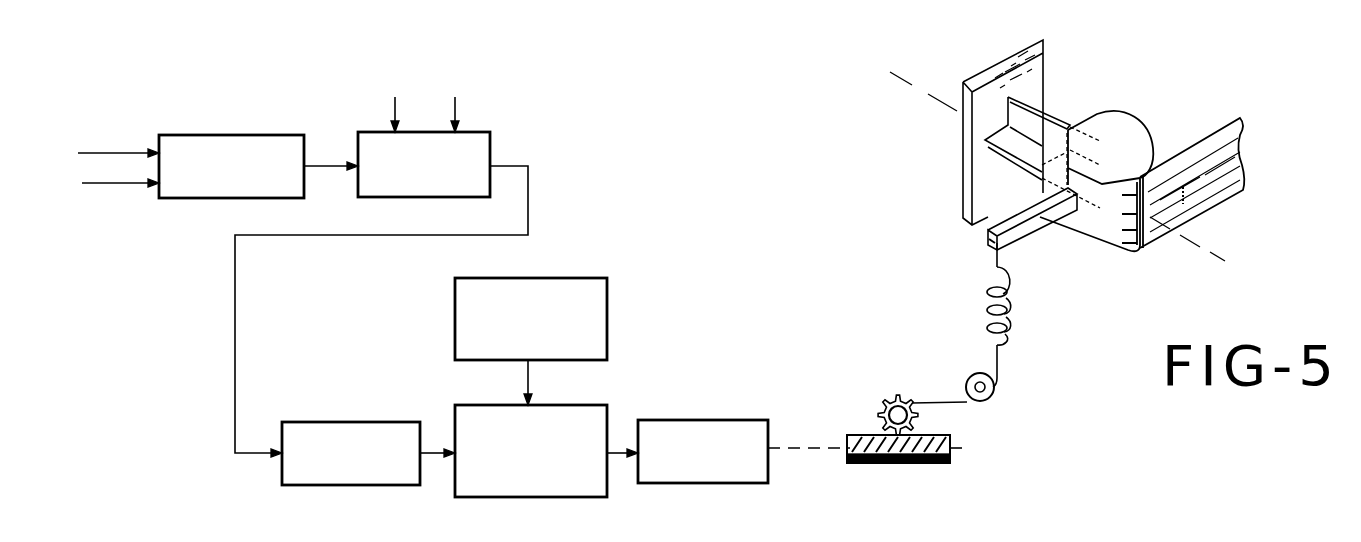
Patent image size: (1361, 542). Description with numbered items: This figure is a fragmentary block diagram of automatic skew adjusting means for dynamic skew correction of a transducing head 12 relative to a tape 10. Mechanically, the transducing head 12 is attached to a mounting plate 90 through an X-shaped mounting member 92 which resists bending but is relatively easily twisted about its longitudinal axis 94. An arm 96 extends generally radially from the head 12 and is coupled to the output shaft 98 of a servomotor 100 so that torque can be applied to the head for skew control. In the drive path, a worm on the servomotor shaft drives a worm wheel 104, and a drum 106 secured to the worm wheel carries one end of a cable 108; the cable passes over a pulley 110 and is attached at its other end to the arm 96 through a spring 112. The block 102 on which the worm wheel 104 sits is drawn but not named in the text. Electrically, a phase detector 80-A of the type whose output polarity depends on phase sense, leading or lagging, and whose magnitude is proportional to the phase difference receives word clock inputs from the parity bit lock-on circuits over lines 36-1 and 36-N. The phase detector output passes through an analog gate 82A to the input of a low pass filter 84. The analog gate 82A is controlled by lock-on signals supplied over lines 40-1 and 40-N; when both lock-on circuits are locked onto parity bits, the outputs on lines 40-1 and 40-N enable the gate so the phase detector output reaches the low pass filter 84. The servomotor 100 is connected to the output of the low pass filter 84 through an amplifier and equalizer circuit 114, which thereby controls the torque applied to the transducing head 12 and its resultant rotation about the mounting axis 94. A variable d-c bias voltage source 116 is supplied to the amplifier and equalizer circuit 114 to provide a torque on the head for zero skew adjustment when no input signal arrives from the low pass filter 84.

The tape 10 is at (1240, 122).
The transducing head 12 is at (1118, 125).
The line 36-1 is at (117, 152).
The line 36-N is at (133, 183).
The line 40-1 is at (392, 112).
The line 40-N is at (457, 110).
The phase detector 80-A is at (248, 135).
The analog gate 82A is at (436, 197).
The low pass filter 84 is at (300, 485).
The mounting plate 90 is at (1046, 58).
The mounting member 92 is at (995, 143).
The longitudinal axis 94 is at (918, 95).
The arm 96 is at (1010, 246).
The output shaft 98 is at (818, 452).
The servomotor 100 is at (699, 483).
The base block 102 is at (910, 465).
The worm wheel 104 is at (888, 402).
The drum 106 is at (907, 425).
The cable 108 is at (1000, 363).
The pulley 110 is at (968, 375).
The spring 112 is at (985, 309).
The amplifier and equalizer circuit 114 is at (478, 497).
The variable d-c bias voltage source 116 is at (455, 300).